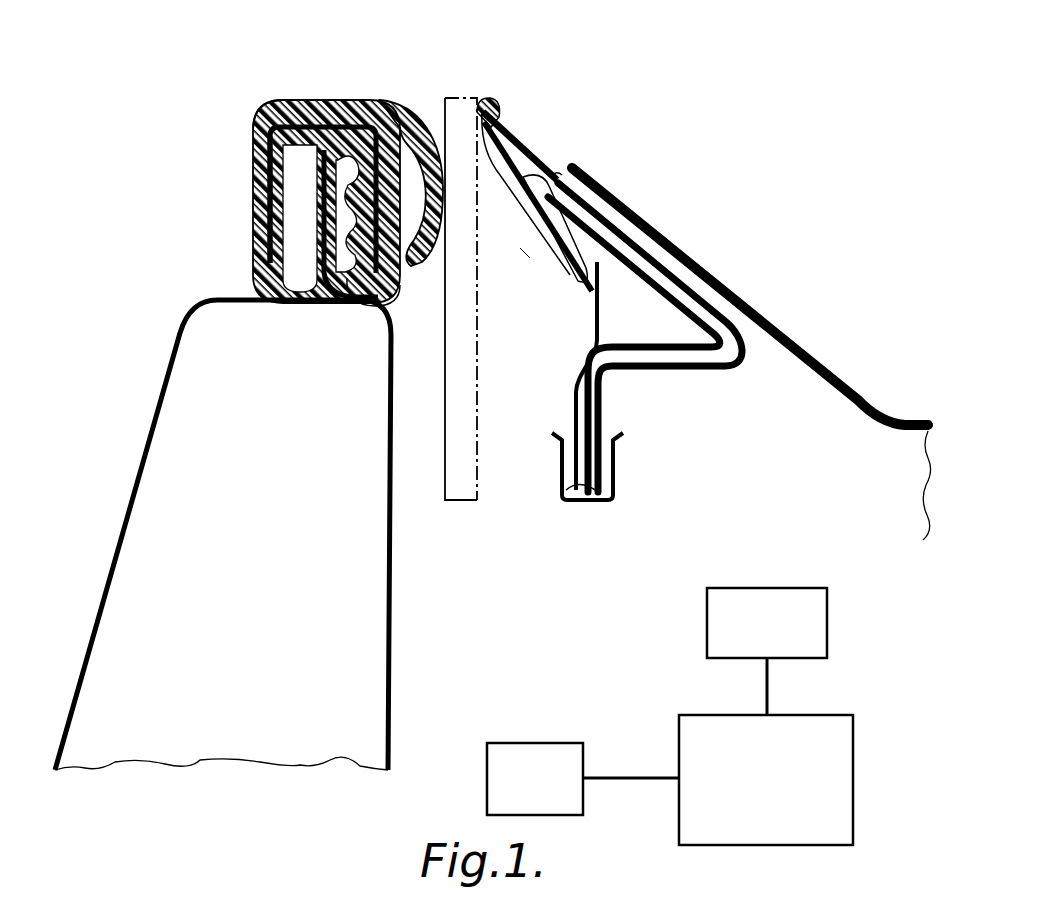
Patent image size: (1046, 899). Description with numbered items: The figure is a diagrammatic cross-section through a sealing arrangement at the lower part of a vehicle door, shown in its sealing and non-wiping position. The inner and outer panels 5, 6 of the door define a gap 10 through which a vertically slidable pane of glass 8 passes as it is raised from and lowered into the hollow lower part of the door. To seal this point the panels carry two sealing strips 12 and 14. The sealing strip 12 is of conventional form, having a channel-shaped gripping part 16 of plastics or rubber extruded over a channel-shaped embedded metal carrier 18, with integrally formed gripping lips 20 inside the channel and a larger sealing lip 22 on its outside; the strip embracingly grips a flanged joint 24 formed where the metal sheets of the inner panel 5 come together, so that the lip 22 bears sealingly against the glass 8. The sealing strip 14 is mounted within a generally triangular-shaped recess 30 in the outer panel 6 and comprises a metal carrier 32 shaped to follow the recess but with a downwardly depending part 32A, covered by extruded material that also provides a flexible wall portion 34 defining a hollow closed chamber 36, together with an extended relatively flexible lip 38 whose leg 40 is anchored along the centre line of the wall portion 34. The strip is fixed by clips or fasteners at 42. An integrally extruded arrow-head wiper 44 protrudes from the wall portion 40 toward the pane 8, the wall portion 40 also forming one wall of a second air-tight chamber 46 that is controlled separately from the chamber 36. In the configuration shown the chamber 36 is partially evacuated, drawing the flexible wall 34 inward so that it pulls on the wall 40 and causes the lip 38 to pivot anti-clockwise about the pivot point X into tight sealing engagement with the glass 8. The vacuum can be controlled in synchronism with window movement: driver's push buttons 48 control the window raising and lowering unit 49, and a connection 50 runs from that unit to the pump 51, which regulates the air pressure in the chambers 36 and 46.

The inner panel 5 is at (262, 437).
The outer panel 6 is at (739, 488).
The pane of glass 8 is at (454, 512).
The gap 10 is at (503, 484).
The sealing strip 12 is at (311, 94).
The sealing strip 14 is at (644, 167).
The channel-shaped gripping part 16 is at (270, 108).
The metal carrier 18 is at (264, 160).
The gripping lips 20 is at (365, 108).
The sealing lip 22 is at (427, 253).
The flanged joint 24 is at (336, 112).
The recess 30 is at (562, 370).
The metal carrier 32 is at (703, 302).
The downwardly depending part 32A is at (560, 502).
The flexible wall portion 34 is at (590, 330).
The hollow closed chamber 36 is at (616, 317).
The flexible lip 38 is at (495, 118).
The leg 40 is at (556, 252).
The fasteners 42 is at (616, 432).
The wiper 44 is at (524, 254).
The second hollow air-tight chamber 46 is at (531, 196).
The driver's push buttons 48 is at (787, 588).
The window raising and lowering unit 49 is at (813, 715).
The connection 50 is at (630, 780).
The pump 51 is at (548, 745).
The pivot point X is at (559, 178).